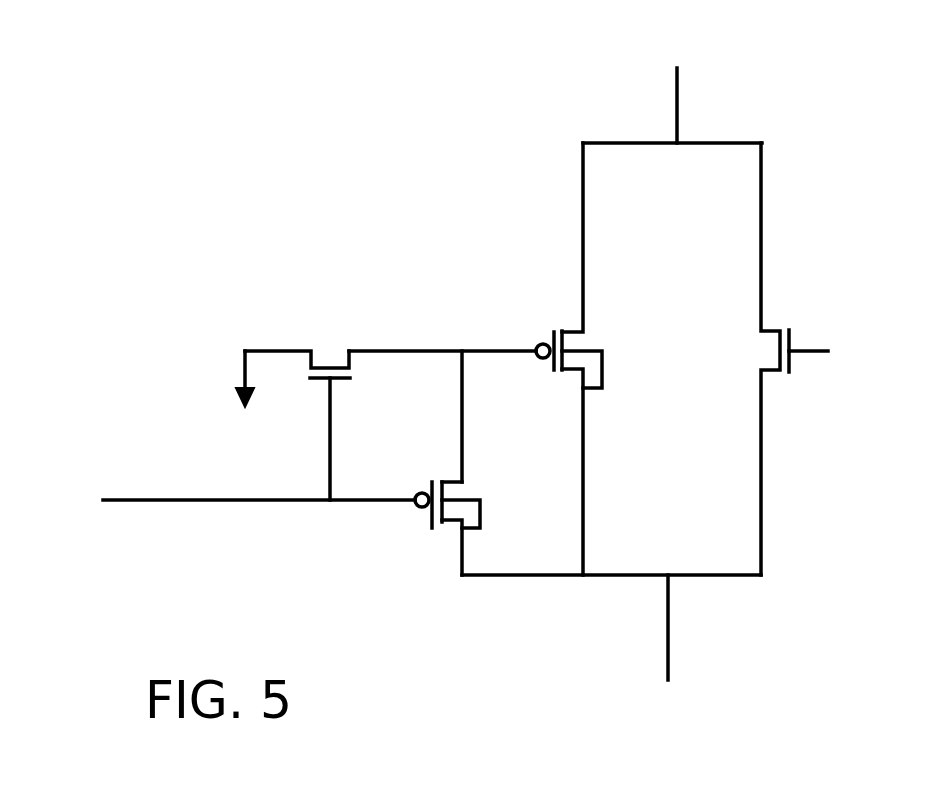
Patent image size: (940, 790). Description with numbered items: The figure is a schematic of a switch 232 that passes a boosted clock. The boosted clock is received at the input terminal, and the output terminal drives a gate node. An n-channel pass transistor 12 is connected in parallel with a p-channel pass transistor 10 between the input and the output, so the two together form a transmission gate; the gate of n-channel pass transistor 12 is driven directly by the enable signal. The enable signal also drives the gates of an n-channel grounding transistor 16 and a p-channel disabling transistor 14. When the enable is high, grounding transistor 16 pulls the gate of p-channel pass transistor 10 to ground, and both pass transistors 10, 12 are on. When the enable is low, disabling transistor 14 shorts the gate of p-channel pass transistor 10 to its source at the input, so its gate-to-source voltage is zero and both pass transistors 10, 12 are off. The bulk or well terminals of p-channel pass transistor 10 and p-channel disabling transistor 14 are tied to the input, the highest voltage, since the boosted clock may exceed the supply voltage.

The p-channel pass transistor 10 is at (558, 368).
The n-channel pass transistor 12 is at (778, 343).
The p-channel disabling transistor 14 is at (430, 524).
The n-channel grounding transistor 16 is at (316, 360).
The switch 232 is at (463, 681).